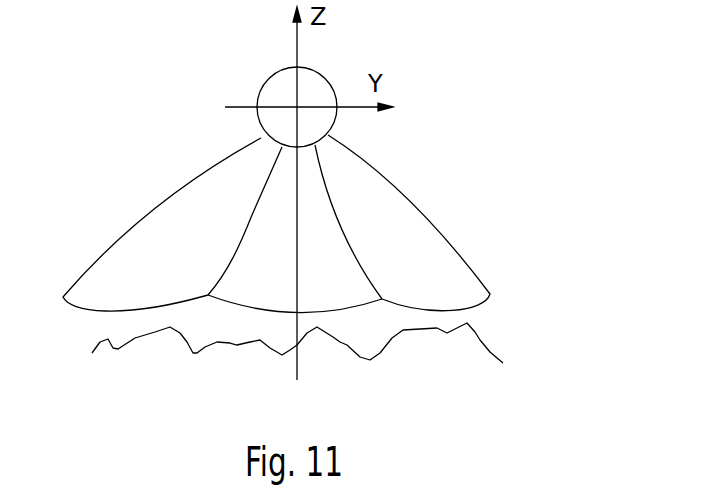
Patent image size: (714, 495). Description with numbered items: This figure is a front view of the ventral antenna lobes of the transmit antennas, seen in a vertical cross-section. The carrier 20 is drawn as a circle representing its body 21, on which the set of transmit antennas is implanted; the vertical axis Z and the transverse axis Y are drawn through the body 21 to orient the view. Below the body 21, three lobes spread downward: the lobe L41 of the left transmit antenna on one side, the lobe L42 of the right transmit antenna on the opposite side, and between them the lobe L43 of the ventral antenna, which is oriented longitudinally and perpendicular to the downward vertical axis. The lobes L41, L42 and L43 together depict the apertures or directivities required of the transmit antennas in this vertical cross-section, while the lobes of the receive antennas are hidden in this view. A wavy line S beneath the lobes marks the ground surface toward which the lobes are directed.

The carrier 20 is at (286, 83).
The body 21 is at (321, 70).
The lobe L41 is at (153, 210).
The lobe L42 is at (422, 212).
The lobe L43 is at (348, 310).
The surface S is at (104, 348).